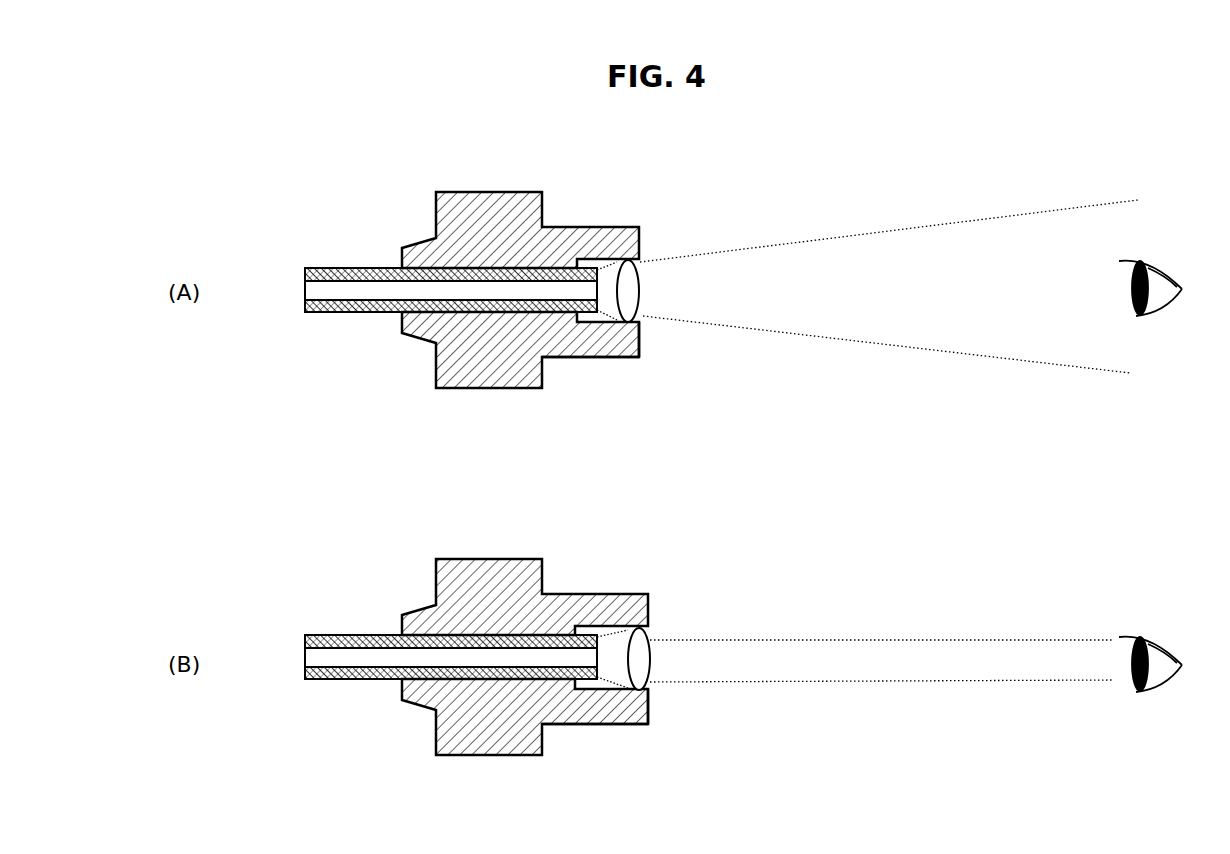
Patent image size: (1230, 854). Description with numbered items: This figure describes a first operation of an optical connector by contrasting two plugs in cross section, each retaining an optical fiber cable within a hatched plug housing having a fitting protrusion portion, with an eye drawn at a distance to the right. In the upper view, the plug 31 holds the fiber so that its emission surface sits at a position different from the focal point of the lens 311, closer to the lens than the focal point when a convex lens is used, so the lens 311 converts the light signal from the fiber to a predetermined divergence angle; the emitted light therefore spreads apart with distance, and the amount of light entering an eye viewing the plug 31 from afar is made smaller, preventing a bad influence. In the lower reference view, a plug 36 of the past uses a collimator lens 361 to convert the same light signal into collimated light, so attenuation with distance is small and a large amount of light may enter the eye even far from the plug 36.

The lens 311 is at (644, 316).
The collimator lens 361 is at (650, 672).
The plug 31 is at (333, 411).
The plug 36 is at (333, 778).